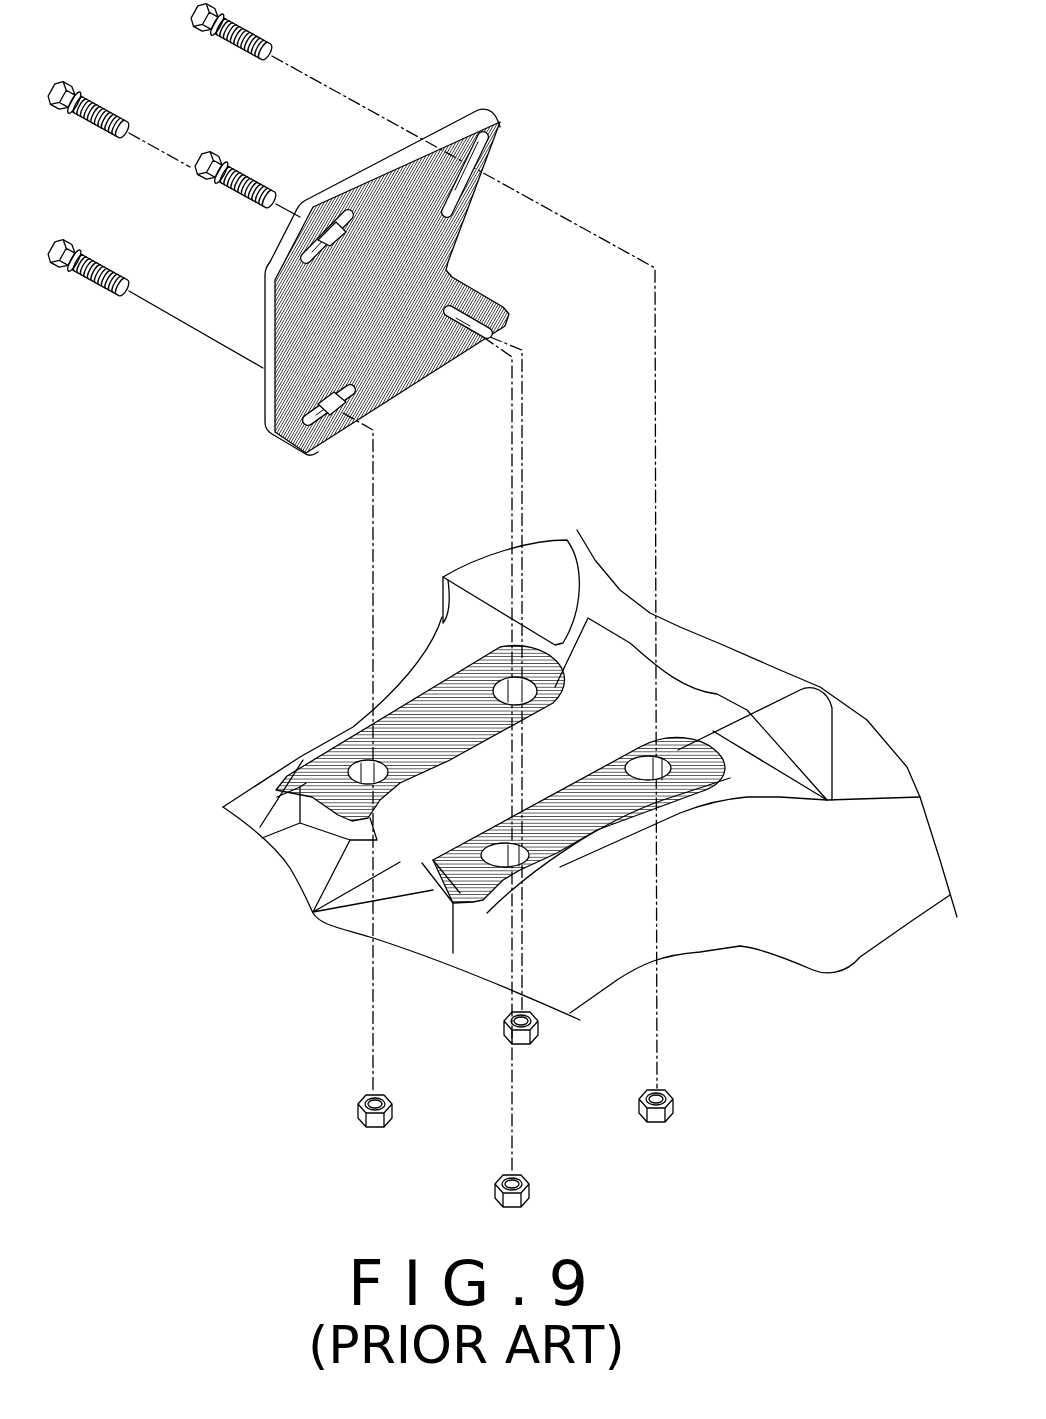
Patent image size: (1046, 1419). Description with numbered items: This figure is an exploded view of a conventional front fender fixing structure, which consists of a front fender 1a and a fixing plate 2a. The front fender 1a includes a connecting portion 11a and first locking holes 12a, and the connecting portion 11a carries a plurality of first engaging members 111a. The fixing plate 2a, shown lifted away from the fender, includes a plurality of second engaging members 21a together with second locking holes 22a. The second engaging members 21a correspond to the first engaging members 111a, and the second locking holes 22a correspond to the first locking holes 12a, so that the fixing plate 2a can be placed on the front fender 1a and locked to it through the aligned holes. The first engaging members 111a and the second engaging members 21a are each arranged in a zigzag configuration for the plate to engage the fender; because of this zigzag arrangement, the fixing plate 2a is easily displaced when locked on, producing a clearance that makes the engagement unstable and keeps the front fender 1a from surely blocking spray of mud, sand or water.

The front fender 1a is at (590, 806).
The connecting portion 11a is at (356, 731).
The first locking holes 12a is at (497, 693).
The first engaging members 111a is at (813, 688).
The fixing plate 2a is at (437, 289).
The second engaging members 21a is at (500, 121).
The second locking holes 22a is at (347, 210).